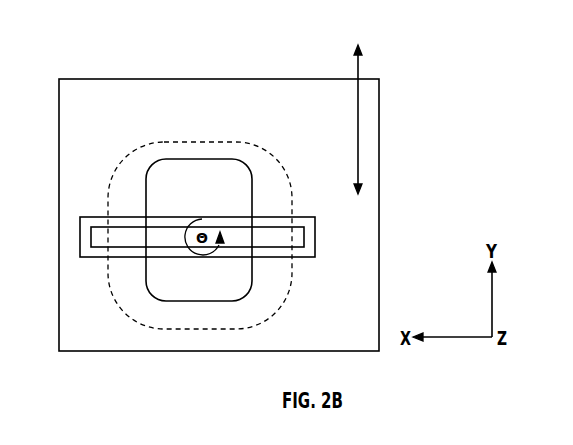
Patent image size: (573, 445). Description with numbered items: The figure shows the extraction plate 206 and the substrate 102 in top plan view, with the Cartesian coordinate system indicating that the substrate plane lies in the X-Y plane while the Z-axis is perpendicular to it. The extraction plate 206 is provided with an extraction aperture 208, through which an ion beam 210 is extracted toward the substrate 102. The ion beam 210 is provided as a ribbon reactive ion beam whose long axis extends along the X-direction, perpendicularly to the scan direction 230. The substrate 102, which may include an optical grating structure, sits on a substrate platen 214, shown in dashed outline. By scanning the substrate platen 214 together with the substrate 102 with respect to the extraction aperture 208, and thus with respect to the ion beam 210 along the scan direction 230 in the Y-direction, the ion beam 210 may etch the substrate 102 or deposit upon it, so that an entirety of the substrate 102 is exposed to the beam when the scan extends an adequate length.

The substrate 102 is at (190, 159).
The extraction plate 206 is at (128, 79).
The extraction aperture 208 is at (122, 219).
The ion beam 210 is at (258, 232).
The substrate platen 214 is at (290, 278).
The scan direction 230 is at (357, 120).